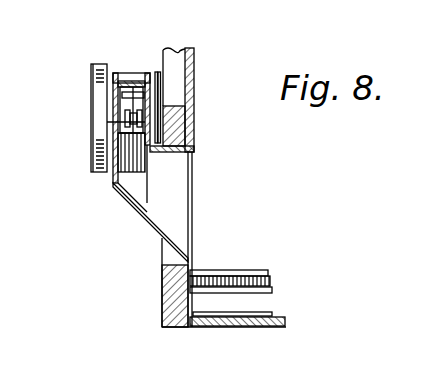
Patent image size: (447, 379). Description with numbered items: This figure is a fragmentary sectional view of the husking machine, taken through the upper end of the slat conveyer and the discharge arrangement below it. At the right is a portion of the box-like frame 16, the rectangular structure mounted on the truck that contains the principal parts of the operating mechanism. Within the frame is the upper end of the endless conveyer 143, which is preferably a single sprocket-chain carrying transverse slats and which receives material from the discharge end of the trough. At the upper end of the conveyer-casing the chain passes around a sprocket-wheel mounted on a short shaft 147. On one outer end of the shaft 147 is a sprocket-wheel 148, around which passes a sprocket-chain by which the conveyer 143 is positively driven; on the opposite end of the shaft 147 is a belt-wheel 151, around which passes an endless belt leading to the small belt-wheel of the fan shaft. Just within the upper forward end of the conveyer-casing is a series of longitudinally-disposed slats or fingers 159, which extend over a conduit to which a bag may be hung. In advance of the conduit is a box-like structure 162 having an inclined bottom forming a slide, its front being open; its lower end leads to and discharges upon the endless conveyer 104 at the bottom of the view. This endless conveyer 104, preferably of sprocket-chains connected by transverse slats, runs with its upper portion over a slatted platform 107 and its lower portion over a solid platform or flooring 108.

The frame 16 is at (194, 74).
The sprocket-wheel 148 is at (156, 72).
The endless conveyer 143 is at (131, 96).
The belt-wheel 151 is at (89, 88).
The short shaft 147 is at (105, 121).
The slats or fingers 159 is at (130, 172).
The box-like structure 162 is at (139, 217).
The endless conveyer 104 is at (253, 270).
The slatted platform 107 is at (270, 283).
The solid platform or flooring 108 is at (285, 322).